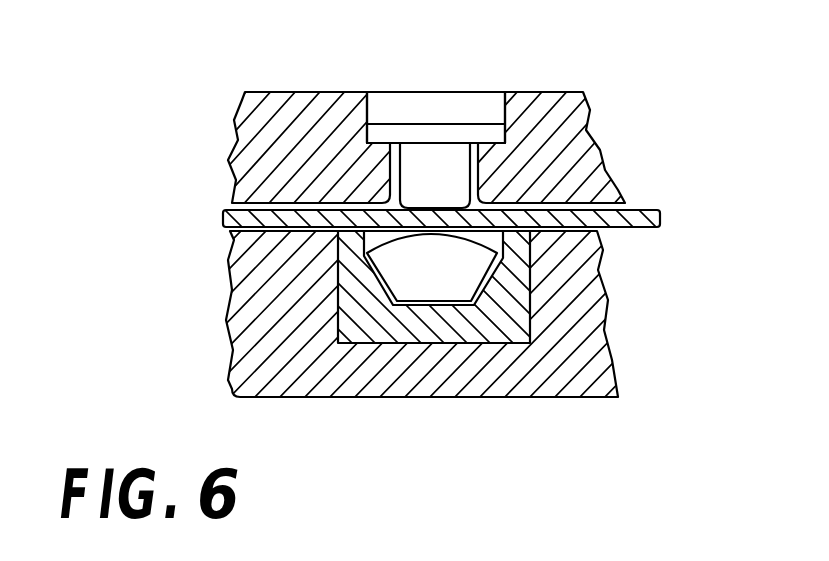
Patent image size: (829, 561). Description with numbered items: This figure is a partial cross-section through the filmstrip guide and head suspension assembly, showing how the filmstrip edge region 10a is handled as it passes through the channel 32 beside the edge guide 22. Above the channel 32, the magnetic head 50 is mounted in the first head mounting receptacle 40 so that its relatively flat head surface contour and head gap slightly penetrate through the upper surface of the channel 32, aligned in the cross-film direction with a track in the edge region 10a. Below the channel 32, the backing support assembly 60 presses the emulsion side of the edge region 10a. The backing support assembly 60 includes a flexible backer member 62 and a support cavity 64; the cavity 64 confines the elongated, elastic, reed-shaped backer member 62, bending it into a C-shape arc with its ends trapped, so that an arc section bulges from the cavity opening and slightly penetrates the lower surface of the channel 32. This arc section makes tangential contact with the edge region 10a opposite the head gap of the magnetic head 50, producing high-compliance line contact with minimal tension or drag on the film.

The edge guide 22 is at (282, 105).
The first head mounting receptacle 40 is at (486, 104).
The magnetic head 50 is at (440, 160).
The edge region 10a is at (653, 216).
The channel 32 is at (232, 233).
The support cavity 64 is at (372, 363).
The backing support assembly 60 is at (531, 350).
The backer member 62 is at (481, 287).